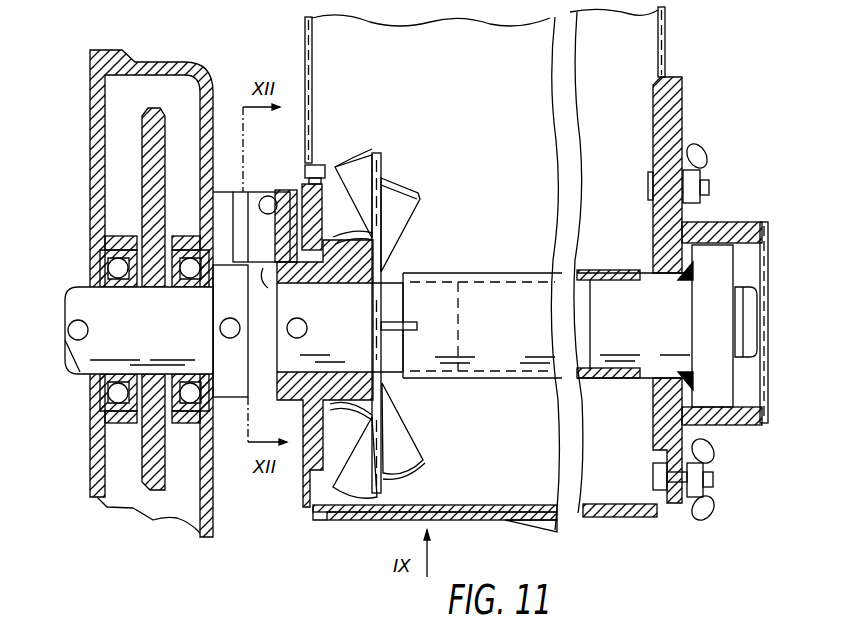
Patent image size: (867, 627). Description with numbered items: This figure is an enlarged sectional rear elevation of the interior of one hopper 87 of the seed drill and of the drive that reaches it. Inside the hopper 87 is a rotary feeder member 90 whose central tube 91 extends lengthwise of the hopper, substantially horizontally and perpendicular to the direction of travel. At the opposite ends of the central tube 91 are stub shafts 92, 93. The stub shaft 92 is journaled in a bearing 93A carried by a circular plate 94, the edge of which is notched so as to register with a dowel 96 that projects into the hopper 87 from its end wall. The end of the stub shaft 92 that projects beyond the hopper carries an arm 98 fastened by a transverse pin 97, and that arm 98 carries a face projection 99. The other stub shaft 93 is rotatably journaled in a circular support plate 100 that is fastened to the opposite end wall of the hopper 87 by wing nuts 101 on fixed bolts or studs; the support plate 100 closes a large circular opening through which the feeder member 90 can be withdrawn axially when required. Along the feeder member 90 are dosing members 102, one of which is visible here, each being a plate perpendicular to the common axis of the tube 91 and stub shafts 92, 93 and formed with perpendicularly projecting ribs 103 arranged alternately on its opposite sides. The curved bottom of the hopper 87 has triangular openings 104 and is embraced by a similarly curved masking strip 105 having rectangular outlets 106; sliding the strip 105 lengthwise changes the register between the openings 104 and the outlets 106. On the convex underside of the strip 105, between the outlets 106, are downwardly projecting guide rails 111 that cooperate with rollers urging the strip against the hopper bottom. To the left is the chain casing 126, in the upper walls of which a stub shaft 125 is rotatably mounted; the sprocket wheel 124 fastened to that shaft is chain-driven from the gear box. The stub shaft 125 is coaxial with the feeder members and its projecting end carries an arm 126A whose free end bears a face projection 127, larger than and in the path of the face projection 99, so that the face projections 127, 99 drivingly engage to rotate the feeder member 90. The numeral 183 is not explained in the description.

The hopper 87 is at (313, 38).
The rotary feeder member 90 is at (543, 380).
The central tube 91 is at (503, 273).
The stub shaft 92 is at (280, 378).
The stub shaft 93 is at (710, 290).
The bearing 93A is at (345, 283).
The circular plate 94 is at (333, 200).
The dowel 96 is at (320, 167).
The transverse pin 97 is at (302, 327).
The arm 98 is at (266, 280).
The face projection 99 is at (253, 195).
The circular support plate 100 is at (657, 132).
The wing nut 101 is at (717, 137).
The dosing member 102 is at (381, 167).
The rib 103 is at (410, 189).
The triangular opening 104 is at (410, 505).
The strip 105 is at (347, 520).
The rectangular outlet 106 is at (448, 517).
The guide rail 111 is at (543, 523).
The sprocket wheel 124 is at (163, 97).
The stub shaft 125 is at (98, 372).
The chain casing 126 is at (160, 63).
The arm 126A is at (233, 200).
The face projection 127 is at (265, 201).
The blade 183 is at (403, 450).